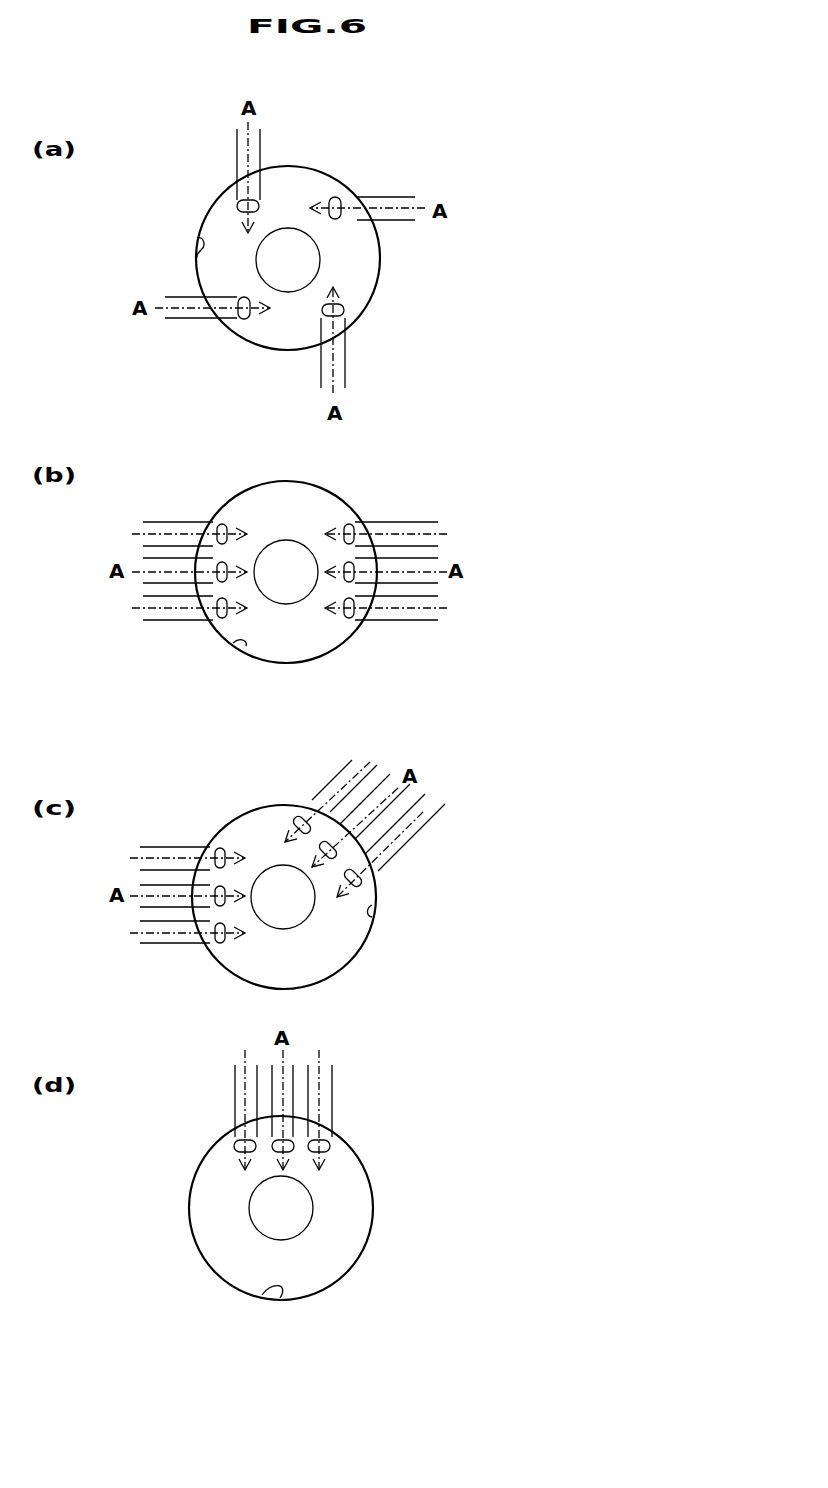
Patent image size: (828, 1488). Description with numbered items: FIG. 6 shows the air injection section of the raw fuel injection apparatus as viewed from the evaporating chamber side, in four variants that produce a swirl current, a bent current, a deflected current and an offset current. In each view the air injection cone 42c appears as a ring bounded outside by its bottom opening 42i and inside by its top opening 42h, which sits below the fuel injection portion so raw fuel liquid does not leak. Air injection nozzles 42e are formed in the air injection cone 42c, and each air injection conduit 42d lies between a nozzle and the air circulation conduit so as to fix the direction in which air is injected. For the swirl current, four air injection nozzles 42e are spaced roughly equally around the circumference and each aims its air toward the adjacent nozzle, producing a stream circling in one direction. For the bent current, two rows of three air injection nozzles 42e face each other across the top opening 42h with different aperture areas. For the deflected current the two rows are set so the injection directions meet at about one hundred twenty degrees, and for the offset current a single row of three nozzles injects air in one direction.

The air injection cone 42c is at (370, 305).
The air injection conduit 42d is at (260, 140).
The air injection nozzle 42e is at (258, 202).
The top opening 42h is at (308, 262).
The bottom opening 42i is at (199, 242).